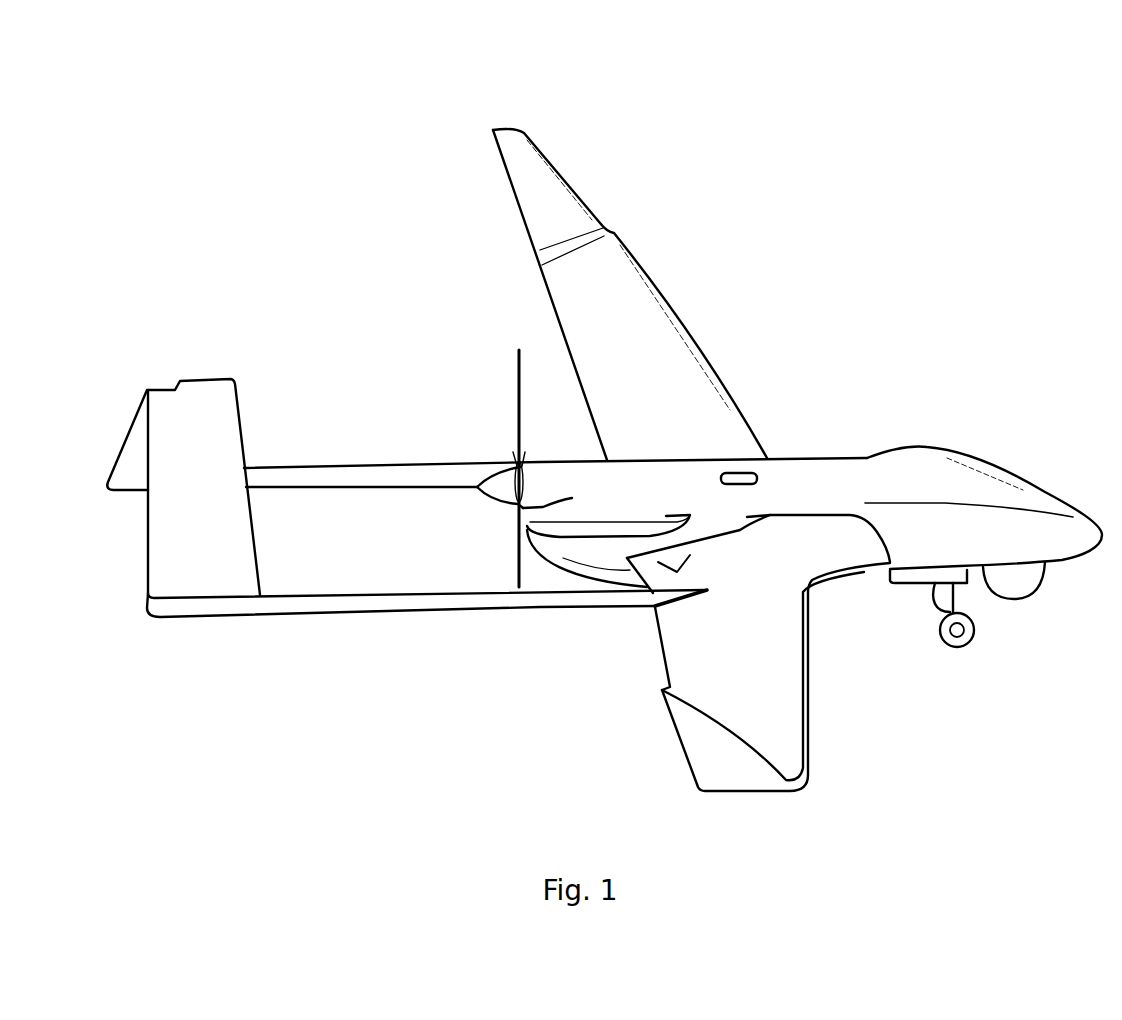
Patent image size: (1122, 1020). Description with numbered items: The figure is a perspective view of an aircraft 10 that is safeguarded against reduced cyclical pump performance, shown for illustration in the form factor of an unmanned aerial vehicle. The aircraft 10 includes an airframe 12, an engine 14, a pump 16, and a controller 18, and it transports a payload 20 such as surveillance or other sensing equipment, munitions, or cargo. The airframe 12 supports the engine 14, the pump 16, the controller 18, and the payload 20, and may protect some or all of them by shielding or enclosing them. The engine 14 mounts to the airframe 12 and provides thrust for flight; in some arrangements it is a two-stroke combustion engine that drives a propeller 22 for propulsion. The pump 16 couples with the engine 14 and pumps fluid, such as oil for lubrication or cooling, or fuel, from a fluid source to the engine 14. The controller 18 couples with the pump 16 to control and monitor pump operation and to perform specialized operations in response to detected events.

The aircraft 10 is at (365, 89).
The airframe 12 is at (877, 467).
The engine 14 is at (606, 532).
The pump 16 is at (606, 517).
The controller 18 is at (587, 558).
The payload 20 is at (799, 508).
The propeller 22 is at (485, 447).